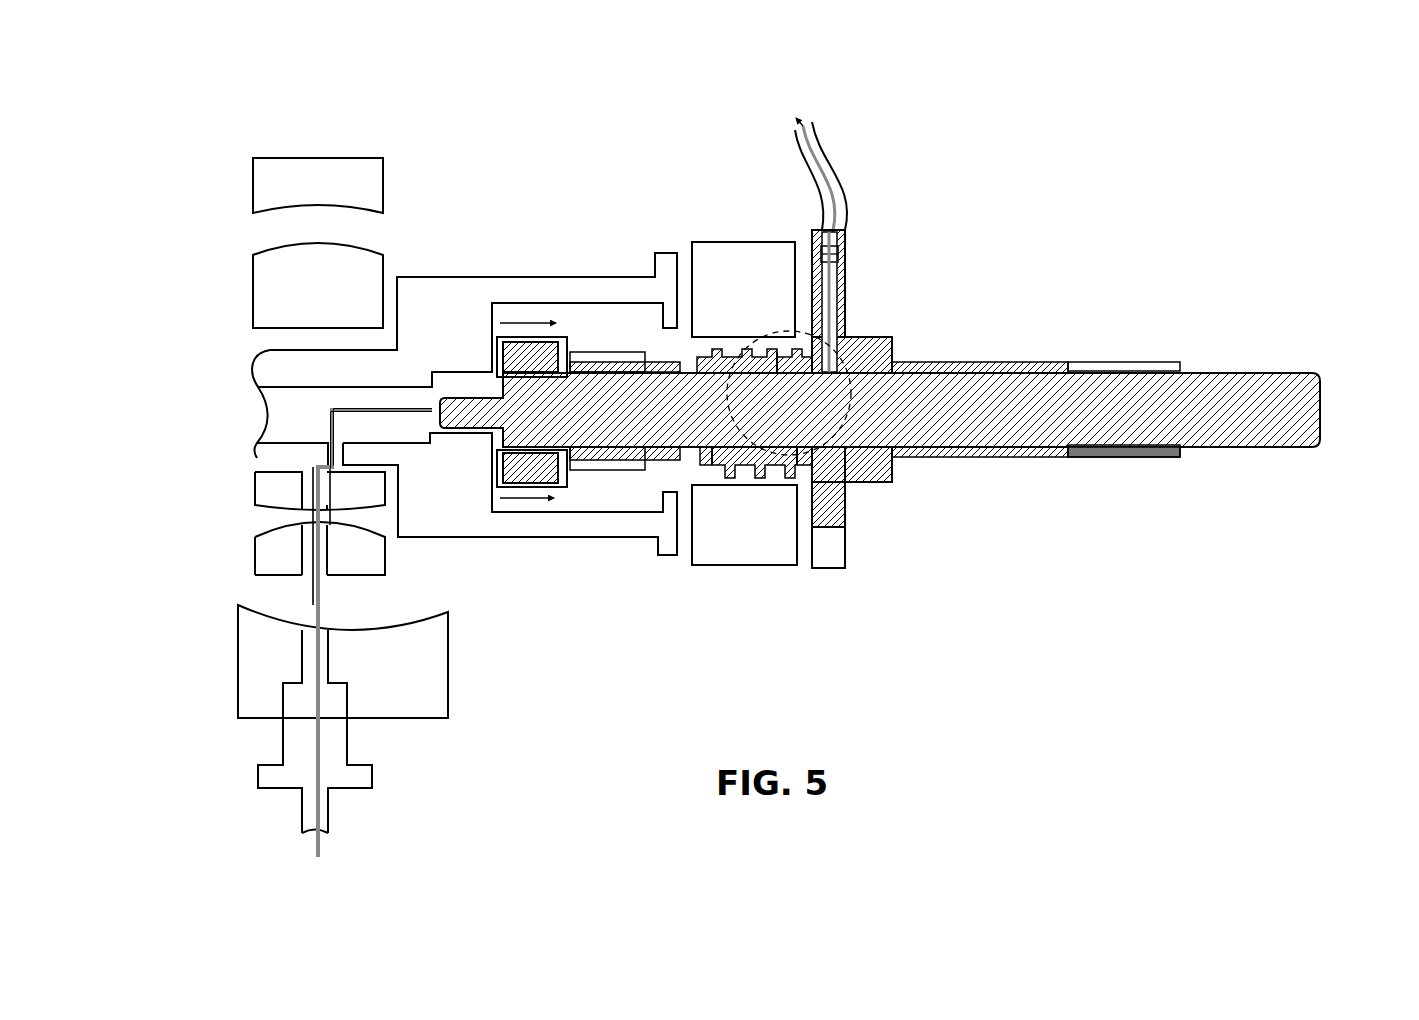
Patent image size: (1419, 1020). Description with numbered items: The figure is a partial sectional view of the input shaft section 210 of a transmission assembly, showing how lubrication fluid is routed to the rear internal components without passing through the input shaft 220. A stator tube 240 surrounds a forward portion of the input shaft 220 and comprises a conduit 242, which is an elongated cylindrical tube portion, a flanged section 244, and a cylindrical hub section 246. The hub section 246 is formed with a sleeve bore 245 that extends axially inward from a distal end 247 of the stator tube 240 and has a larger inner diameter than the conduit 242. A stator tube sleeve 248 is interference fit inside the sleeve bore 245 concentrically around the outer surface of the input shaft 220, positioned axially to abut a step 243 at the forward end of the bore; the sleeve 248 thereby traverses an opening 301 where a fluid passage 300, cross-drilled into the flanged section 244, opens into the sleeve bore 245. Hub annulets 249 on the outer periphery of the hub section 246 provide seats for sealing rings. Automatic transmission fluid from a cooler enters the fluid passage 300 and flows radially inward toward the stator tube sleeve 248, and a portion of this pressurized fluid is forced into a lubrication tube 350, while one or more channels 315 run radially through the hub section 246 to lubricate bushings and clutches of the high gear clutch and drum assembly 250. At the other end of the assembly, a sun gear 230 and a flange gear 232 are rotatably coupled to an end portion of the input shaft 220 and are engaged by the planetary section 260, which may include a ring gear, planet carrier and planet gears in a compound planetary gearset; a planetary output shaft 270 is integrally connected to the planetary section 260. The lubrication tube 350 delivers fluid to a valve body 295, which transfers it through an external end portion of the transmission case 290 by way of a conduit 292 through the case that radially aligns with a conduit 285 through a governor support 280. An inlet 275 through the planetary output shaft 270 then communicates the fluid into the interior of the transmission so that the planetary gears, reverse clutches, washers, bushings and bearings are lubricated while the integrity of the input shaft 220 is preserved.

The input shaft section 210 is at (1082, 553).
The input shaft 220 is at (1206, 366).
The sun gear 230 is at (560, 487).
The flange gear 232 is at (608, 463).
The stator tube 240 is at (1120, 463).
The conduit 242 is at (1035, 362).
The step 243 is at (890, 452).
The flanged section 244 is at (845, 310).
The sleeve bore 245 is at (763, 472).
The cylindrical hub section 246 is at (777, 360).
The distal end 247 is at (712, 452).
The stator tube sleeve 248 is at (853, 450).
The hub annulets 249 is at (797, 450).
The high gear clutch and drum assembly 250 is at (732, 320).
The planetary section 260 is at (453, 273).
The planetary output shaft 270 is at (305, 350).
The inlet 275 is at (323, 446).
The governor support 280 is at (265, 493).
The conduit 285 is at (303, 478).
The transmission case 290 is at (265, 540).
The conduit 292 is at (300, 570).
The valve body 295 is at (400, 703).
The fluid passage 300 is at (838, 253).
The opening 301 is at (830, 367).
The channels 315 is at (718, 357).
The lubrication tube 350 is at (332, 818).